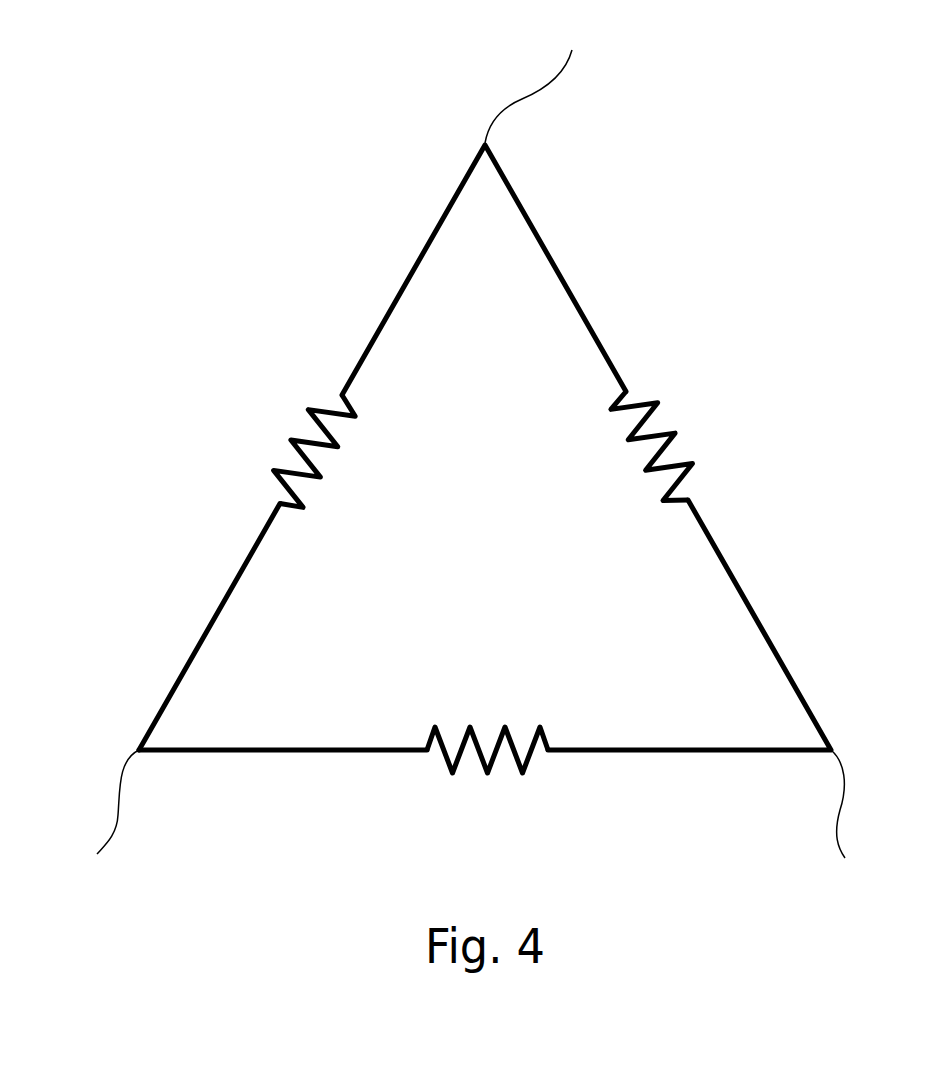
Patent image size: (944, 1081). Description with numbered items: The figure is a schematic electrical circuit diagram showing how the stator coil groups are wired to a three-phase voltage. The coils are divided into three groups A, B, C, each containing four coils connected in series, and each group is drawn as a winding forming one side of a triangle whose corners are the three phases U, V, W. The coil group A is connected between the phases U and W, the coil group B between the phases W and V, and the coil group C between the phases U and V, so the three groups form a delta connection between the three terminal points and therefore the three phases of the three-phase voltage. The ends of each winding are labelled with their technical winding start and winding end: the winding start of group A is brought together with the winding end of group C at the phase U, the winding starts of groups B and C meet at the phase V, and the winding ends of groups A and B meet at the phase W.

The coil group A is at (297, 451).
The coil group B is at (487, 775).
The coil group C is at (666, 446).
The phase U is at (548, 125).
The phase V is at (829, 798).
The phase W is at (118, 798).